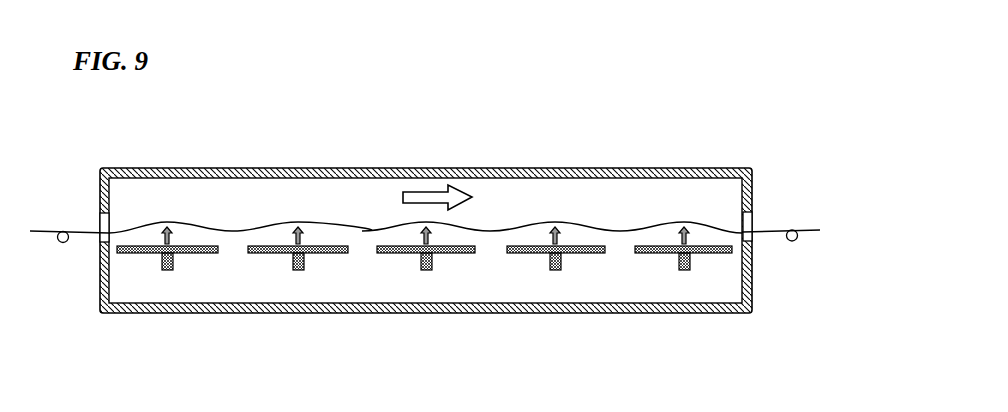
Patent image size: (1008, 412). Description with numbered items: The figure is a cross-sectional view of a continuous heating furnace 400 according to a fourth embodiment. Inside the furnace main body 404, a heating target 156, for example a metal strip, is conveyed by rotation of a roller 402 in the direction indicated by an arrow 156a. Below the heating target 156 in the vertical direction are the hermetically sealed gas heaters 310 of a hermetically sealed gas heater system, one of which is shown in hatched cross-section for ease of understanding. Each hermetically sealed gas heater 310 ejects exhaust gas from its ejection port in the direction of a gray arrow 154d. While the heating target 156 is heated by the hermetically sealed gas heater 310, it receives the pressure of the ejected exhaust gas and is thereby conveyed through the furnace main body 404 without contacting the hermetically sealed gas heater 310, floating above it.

The continuous heating furnace 400 is at (585, 138).
The furnace main body 404 is at (708, 168).
The roller 402 is at (63, 242).
The heating target 156 is at (608, 228).
The arrow 156a is at (424, 191).
The hermetically sealed gas heater 310 is at (140, 254).
The gray arrow 154d is at (172, 237).